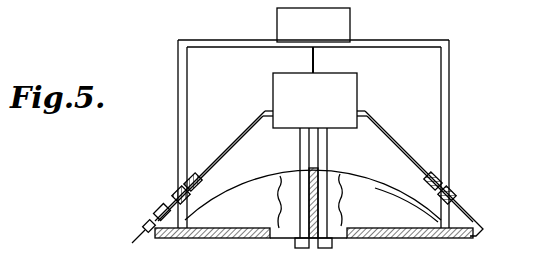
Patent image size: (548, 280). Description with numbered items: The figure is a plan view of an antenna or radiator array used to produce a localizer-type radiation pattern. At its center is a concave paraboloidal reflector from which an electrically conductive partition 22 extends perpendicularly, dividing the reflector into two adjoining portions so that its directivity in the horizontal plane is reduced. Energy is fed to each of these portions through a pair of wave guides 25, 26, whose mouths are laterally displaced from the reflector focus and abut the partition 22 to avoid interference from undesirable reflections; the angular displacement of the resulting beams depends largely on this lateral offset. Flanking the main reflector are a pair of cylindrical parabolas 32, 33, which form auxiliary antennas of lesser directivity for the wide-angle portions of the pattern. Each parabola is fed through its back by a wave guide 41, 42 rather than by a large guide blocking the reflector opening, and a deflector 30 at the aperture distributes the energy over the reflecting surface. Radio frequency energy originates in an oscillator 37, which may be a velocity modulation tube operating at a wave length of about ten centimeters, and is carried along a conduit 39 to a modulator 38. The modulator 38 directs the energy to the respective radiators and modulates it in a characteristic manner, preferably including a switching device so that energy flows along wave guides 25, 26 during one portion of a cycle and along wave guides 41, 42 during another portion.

The electrically conductive partition 22 is at (347, 238).
The wave guide 25 is at (300, 152).
The wave guide 26 is at (322, 153).
The deflector 30 is at (138, 237).
The cylindrical parabola 32 is at (158, 209).
The cylindrical parabola 33 is at (470, 204).
The oscillator 37 is at (351, 16).
The modulator 38 is at (348, 78).
The conduit 39 is at (316, 61).
The wave guide 41 is at (232, 140).
The wave guide 42 is at (388, 127).